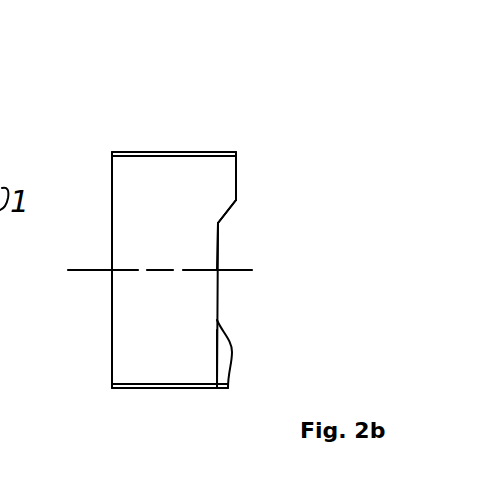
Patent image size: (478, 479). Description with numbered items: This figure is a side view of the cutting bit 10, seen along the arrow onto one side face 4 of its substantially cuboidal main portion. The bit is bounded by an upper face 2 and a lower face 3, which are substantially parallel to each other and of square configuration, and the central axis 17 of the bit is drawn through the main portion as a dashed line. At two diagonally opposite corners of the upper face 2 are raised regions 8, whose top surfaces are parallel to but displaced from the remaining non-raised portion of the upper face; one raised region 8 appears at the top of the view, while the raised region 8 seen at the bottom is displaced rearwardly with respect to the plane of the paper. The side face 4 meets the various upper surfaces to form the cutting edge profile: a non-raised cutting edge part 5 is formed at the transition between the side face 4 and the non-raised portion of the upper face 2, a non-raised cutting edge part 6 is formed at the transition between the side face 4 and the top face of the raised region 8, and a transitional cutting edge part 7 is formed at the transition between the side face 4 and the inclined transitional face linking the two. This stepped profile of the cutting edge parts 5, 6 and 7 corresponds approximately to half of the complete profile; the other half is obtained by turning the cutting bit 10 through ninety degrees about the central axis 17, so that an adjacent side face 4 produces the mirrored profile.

The cutting bit 10 is at (220, 111).
The side face 4 is at (174, 270).
The lower face 3 is at (108, 319).
The central axis 17 is at (90, 270).
The raised region 8 is at (238, 170).
The non-raised cutting edge part 6 is at (238, 176).
The transitional cutting edge part 7 is at (227, 222).
The non-raised cutting edge part 5 is at (221, 257).
The upper face 2 is at (221, 290).